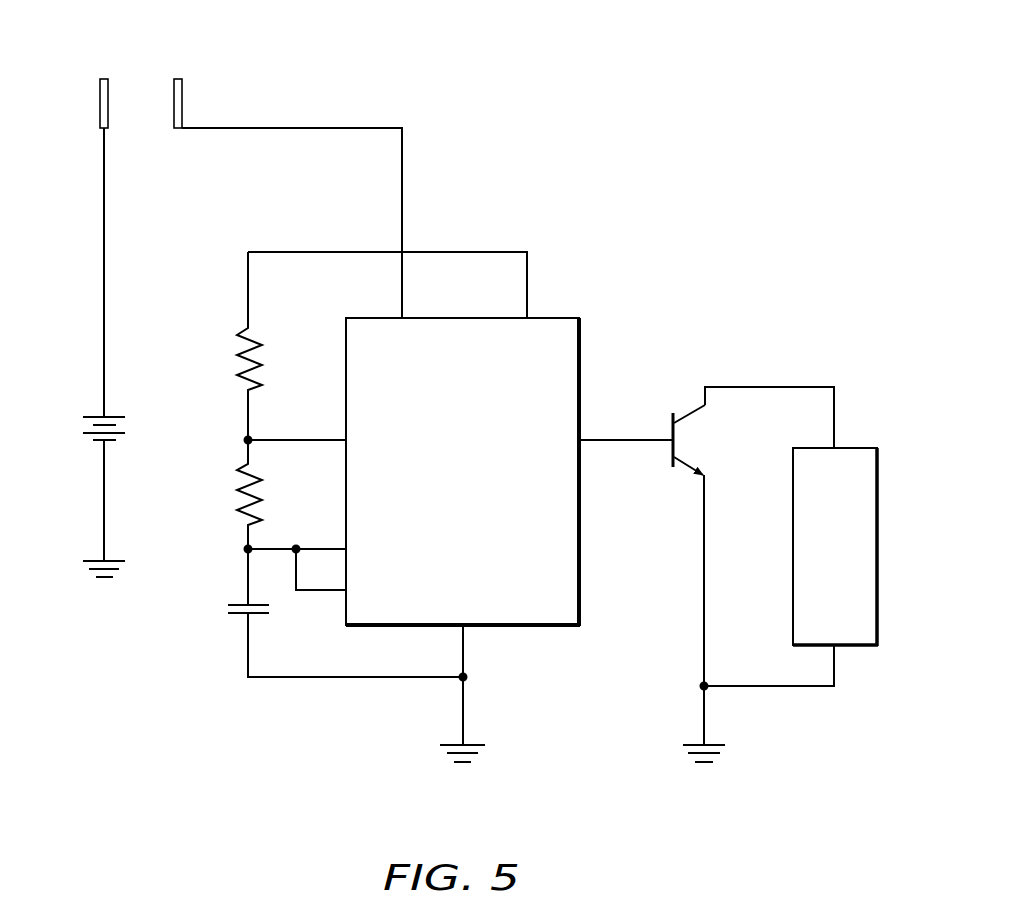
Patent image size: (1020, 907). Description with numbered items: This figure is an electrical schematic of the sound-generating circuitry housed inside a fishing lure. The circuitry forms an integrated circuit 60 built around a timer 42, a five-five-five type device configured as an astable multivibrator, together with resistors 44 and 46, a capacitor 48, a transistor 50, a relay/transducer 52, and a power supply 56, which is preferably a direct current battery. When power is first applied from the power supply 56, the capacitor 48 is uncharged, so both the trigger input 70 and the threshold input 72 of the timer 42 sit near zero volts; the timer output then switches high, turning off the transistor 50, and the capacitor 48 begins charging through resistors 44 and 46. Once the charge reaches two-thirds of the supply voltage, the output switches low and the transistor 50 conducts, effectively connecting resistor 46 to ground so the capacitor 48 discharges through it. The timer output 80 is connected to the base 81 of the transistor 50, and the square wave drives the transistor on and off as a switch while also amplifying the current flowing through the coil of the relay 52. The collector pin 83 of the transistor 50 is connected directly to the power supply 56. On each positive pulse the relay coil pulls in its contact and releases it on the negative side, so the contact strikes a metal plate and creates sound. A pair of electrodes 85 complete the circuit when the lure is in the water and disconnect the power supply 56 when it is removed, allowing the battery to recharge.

The electrodes 85 is at (103, 78).
The power supply 56 is at (94, 417).
The resistor 44 is at (237, 352).
The resistor 46 is at (237, 470).
The capacitor 48 is at (230, 605).
The trigger input 70 is at (327, 548).
The threshold input 72 is at (322, 592).
The timer 42 is at (525, 628).
The timer output 80 is at (643, 438).
The base 81 is at (640, 453).
The transistor 50 is at (687, 481).
The collector pin 83 is at (688, 392).
The relay/transducer 52 is at (848, 447).
The integrated circuit 60 is at (617, 184).